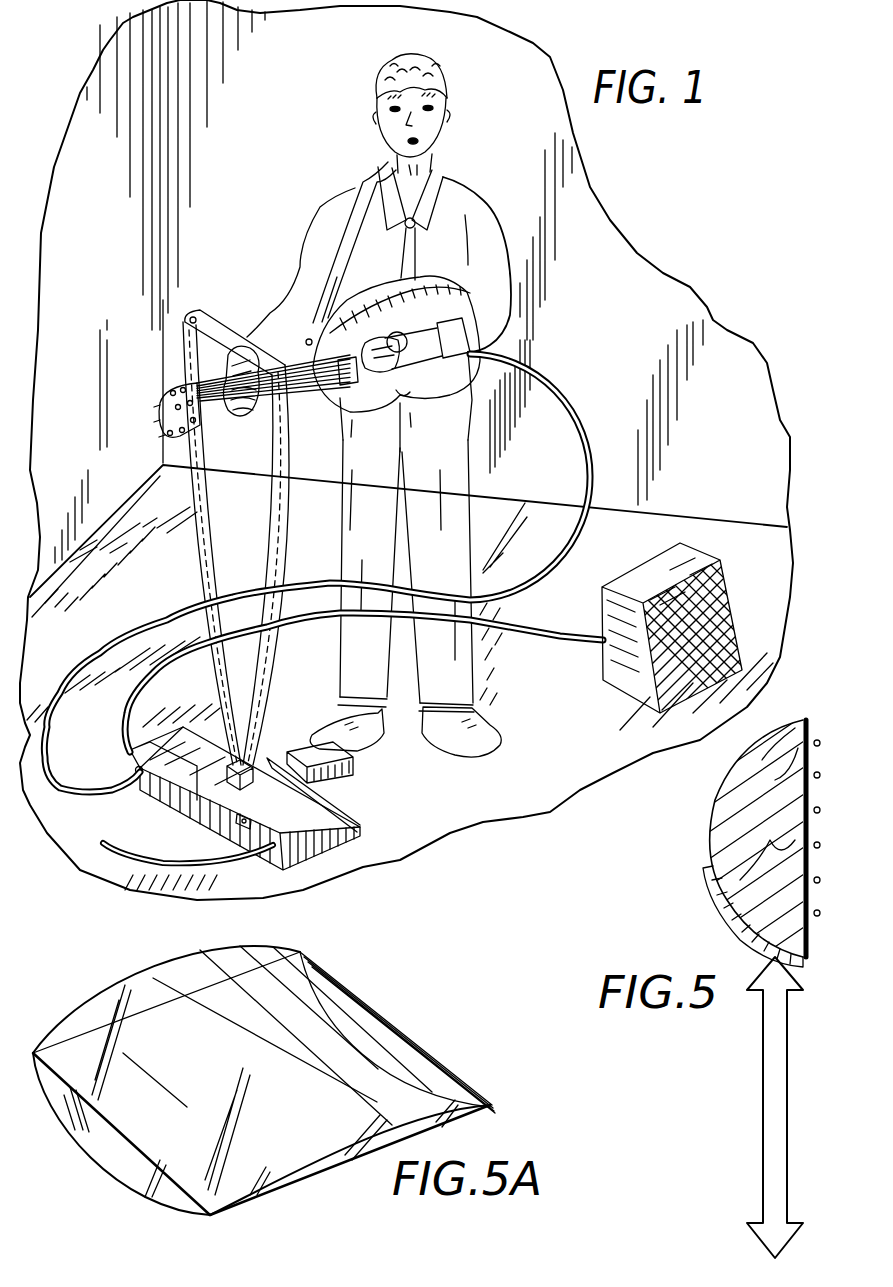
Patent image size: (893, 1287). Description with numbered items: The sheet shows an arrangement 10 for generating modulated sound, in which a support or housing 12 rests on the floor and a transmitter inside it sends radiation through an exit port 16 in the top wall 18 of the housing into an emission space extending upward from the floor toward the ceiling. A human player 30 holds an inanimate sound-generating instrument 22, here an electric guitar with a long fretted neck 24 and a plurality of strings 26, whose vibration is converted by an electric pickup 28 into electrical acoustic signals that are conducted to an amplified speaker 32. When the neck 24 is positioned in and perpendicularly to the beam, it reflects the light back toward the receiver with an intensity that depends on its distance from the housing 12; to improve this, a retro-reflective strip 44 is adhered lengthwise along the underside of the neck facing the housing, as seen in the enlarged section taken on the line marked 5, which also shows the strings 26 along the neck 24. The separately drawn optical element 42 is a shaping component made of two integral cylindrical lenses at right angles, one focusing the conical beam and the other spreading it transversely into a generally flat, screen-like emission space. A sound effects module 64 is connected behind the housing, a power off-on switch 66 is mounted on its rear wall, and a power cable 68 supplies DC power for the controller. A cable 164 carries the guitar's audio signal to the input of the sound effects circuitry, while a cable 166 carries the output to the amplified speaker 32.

In FIG. 1, the section line of FIG. 5 through emitter post 5 is at (297, 338).
In FIG. 1, the arrangement for generating modulated sound 10 is at (310, 356).
In FIG. 1, the housing 12 is at (245, 822).
In FIG. 1, the exit port 16 is at (250, 782).
In FIG. 1, the top wall 18 is at (158, 744).
In FIG. 1, the sound-generating instrument 22 is at (486, 366).
In FIG. 1, the neck 24 is at (352, 286).
In FIG. 5, the neck 24 is at (750, 846).
In FIG. 1, the strings 26 is at (362, 376).
In FIG. 5, the strings 26 is at (820, 741).
In FIG. 1, the electric pickup 28 is at (412, 398).
In FIG. 1, the human player 30 is at (481, 186).
In FIG. 1, the amplified speaker 32 is at (667, 558).
In FIG. 5A, the optical element 42 is at (367, 1000).
In FIG. 5, the retro-reflective strip 44 is at (727, 925).
In FIG. 1, the sound effects module 64 is at (134, 768).
In FIG. 1, the power off-on switch 66 is at (247, 833).
In FIG. 1, the power cable 68 is at (177, 866).
In FIG. 1, the cable 164 is at (570, 407).
In FIG. 1, the cable 166 is at (578, 640).